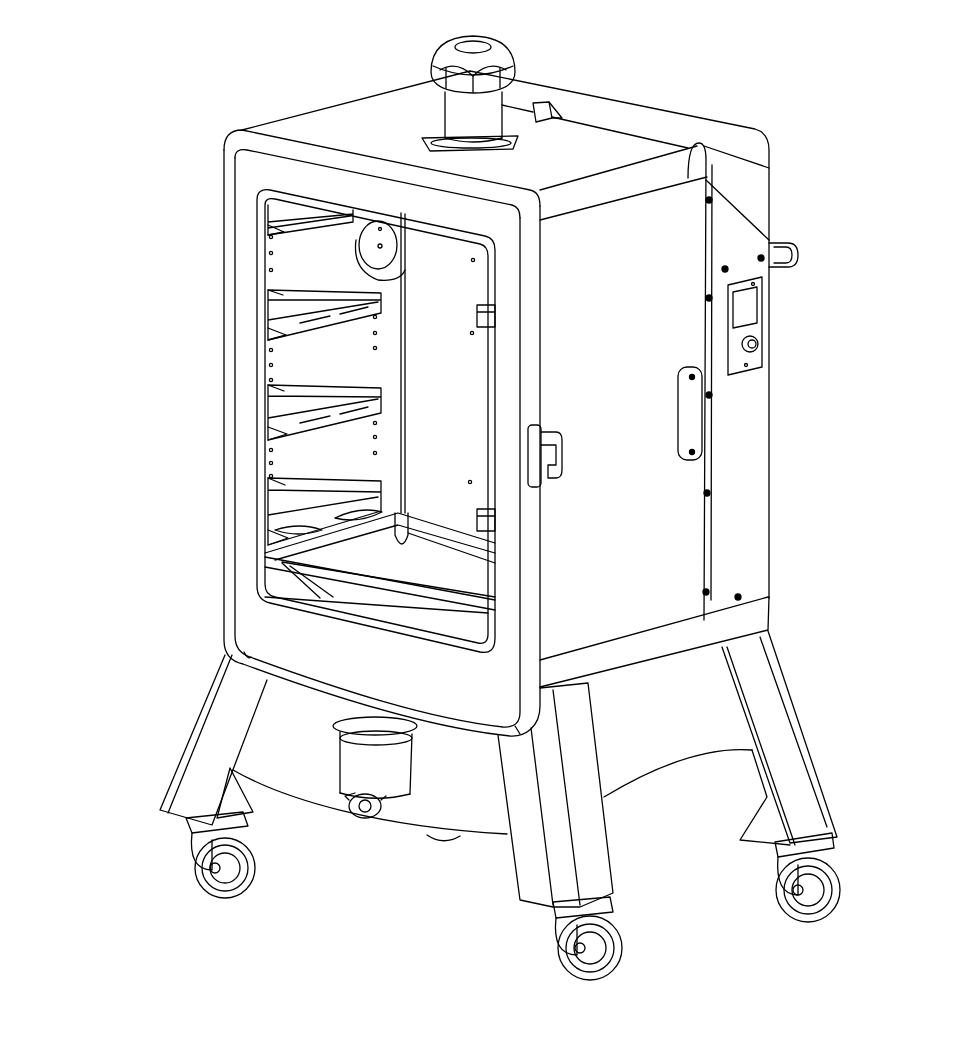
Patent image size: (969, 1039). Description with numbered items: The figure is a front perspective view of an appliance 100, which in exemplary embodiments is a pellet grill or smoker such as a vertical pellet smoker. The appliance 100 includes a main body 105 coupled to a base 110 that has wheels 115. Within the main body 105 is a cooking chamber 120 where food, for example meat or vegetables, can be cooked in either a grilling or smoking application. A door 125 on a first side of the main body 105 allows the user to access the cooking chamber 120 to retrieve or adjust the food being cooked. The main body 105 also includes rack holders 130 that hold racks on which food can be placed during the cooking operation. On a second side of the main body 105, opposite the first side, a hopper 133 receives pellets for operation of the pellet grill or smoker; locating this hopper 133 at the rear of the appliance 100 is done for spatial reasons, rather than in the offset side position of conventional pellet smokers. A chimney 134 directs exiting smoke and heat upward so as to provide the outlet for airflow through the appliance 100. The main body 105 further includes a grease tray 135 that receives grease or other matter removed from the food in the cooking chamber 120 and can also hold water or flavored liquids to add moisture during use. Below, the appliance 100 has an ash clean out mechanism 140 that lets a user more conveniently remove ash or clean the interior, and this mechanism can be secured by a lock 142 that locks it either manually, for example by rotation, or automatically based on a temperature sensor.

The appliance 100 is at (97, 134).
The main body 105 is at (308, 103).
The base 110 is at (810, 810).
The wheels 115 is at (210, 877).
The cooking chamber 120 is at (455, 385).
The door 125 is at (247, 417).
The rack holders 130 is at (262, 322).
The hopper 133 is at (767, 180).
The chimney 134 is at (513, 53).
The grease tray 135 is at (263, 553).
The ash clean out mechanism 140 is at (350, 753).
The lock 142 is at (367, 822).